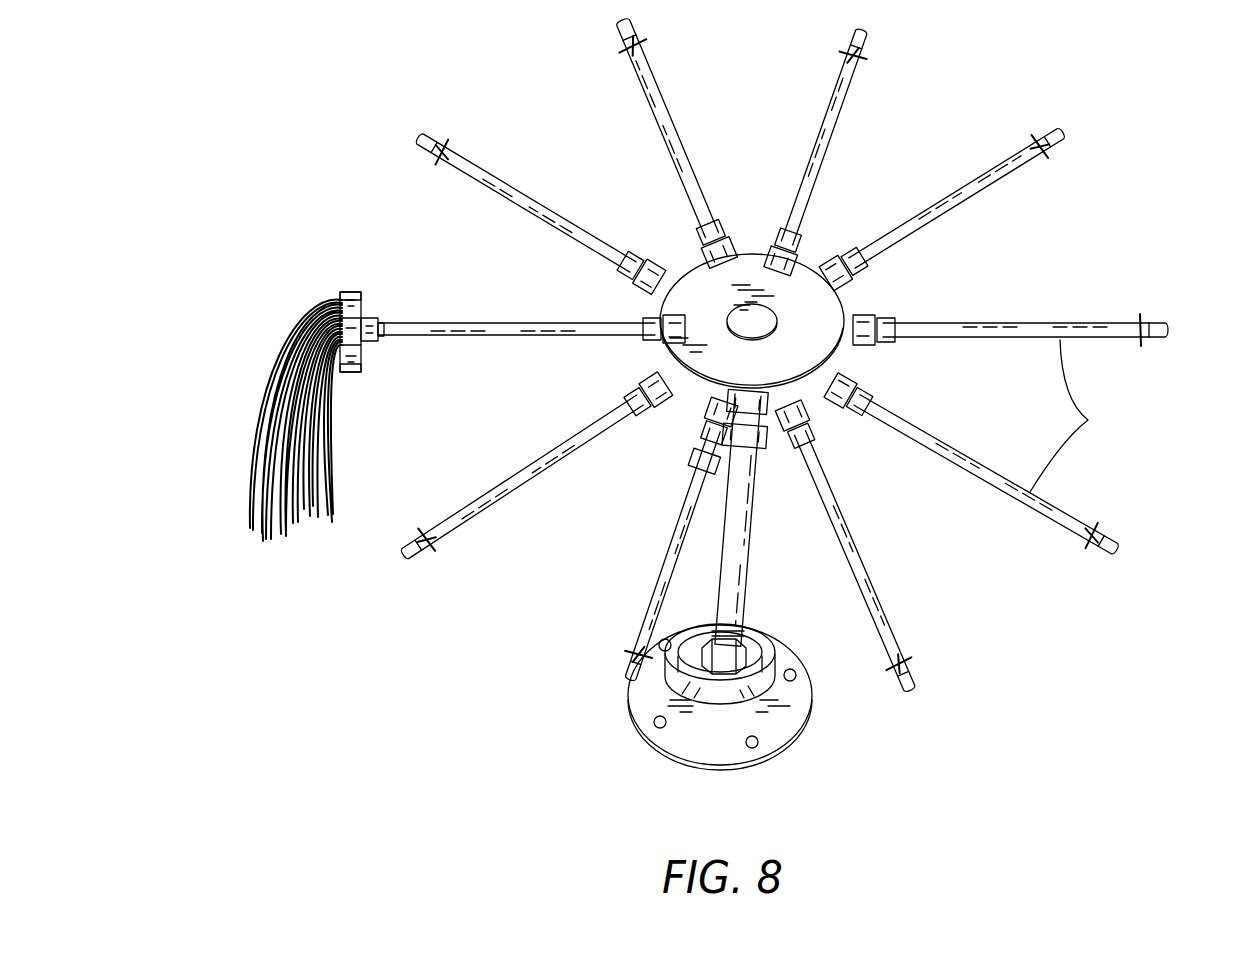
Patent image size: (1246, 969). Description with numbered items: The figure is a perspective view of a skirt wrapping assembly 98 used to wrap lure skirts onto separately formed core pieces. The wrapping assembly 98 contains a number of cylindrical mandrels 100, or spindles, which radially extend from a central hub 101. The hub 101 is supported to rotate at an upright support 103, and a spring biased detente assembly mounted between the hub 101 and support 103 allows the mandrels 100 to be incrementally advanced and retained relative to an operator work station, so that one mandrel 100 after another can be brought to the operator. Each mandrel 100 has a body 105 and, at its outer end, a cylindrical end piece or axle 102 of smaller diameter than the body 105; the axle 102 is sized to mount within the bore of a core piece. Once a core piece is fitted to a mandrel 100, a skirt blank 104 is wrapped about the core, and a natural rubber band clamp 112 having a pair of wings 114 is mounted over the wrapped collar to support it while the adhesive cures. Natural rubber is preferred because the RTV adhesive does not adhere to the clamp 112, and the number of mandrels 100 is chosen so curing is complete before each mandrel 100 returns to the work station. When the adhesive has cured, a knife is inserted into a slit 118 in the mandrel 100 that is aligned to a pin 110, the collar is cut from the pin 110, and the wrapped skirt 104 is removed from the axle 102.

The wrapping assembly 98 is at (970, 316).
The mandrel 100 is at (1076, 416).
The hub 101 is at (820, 350).
The axle 102 is at (425, 142).
The upright support 103 is at (750, 572).
The skirt blank 104 is at (264, 405).
The body 105 is at (668, 105).
The pin 110 is at (636, 45).
The band clamp 112 is at (367, 298).
The wings 114 is at (348, 292).
The slit 118 is at (633, 58).